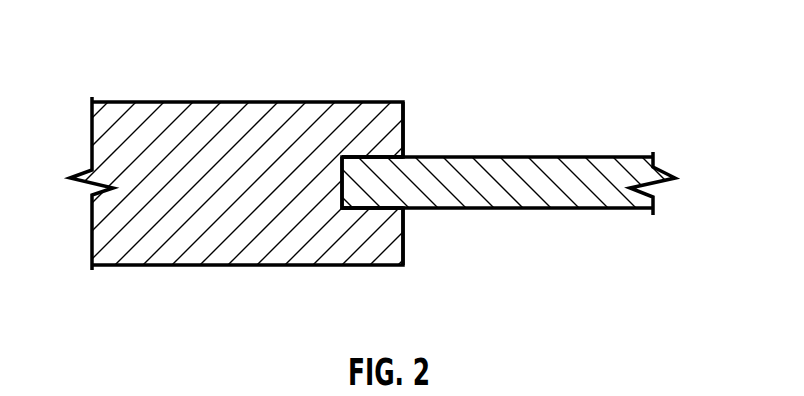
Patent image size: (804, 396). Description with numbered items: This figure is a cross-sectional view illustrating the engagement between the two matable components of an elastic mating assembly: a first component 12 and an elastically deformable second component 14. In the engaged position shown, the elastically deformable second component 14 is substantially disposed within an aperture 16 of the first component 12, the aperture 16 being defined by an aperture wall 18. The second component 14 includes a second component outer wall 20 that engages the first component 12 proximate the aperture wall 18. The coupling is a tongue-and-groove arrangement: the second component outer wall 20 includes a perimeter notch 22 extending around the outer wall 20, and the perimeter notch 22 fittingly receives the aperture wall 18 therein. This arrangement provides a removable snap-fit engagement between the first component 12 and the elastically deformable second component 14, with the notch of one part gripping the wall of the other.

The first component 12 is at (547, 235).
The elastically deformable second component 14 is at (166, 80).
The aperture 16 is at (420, 238).
The aperture wall 18 is at (338, 183).
The second component outer wall 20 is at (404, 130).
The perimeter notch 22 is at (383, 161).